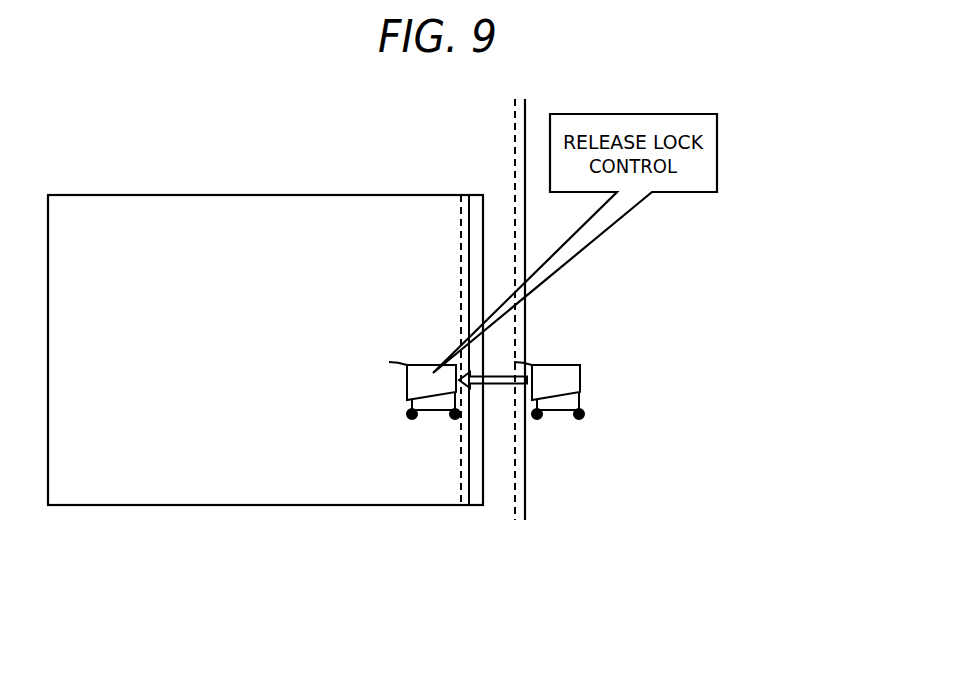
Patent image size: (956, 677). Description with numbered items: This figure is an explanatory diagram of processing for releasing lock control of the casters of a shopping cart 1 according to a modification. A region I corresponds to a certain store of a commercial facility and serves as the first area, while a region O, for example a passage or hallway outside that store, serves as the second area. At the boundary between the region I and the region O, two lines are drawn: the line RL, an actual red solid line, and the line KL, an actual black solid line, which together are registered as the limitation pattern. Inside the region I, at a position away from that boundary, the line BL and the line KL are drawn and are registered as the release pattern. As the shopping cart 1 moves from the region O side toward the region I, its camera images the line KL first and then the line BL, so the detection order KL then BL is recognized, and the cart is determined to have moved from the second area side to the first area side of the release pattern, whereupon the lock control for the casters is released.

The shopping cart 1 is at (423, 363).
The region I is at (123, 270).
The region O is at (817, 270).
The line KL is at (526, 493).
The line BL is at (462, 485).
The line RL is at (513, 518).